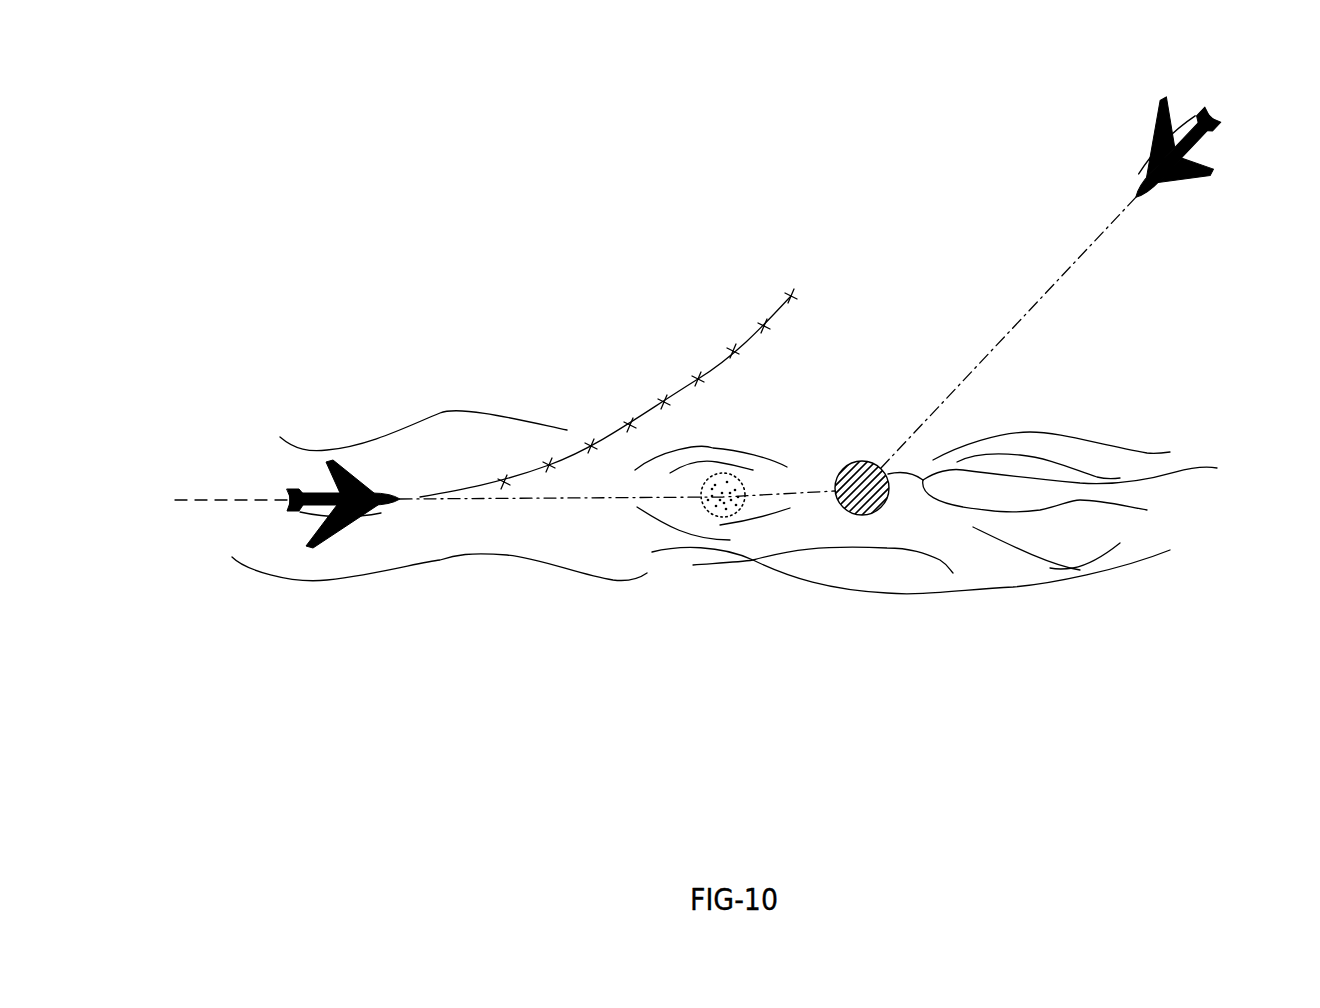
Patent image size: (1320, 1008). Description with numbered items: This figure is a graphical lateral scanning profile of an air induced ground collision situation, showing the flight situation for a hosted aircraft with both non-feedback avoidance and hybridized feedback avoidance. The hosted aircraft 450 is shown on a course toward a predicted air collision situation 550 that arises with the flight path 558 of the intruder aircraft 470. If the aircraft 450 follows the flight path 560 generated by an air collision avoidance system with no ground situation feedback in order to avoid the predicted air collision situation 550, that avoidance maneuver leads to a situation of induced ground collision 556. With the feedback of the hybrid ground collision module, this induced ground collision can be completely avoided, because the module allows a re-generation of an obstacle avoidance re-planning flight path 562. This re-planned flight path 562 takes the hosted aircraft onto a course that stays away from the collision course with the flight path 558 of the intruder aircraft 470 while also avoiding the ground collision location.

The aircraft 450 is at (330, 470).
The intruder aircraft 470 is at (1147, 160).
The predicted air collision situation 550 is at (1067, 488).
The induced ground collision 556 is at (738, 510).
The flight path of the intruder aircraft 558 is at (997, 343).
The flight path 560 is at (583, 500).
The obstacle avoidance re-planning flight path 562 is at (688, 383).